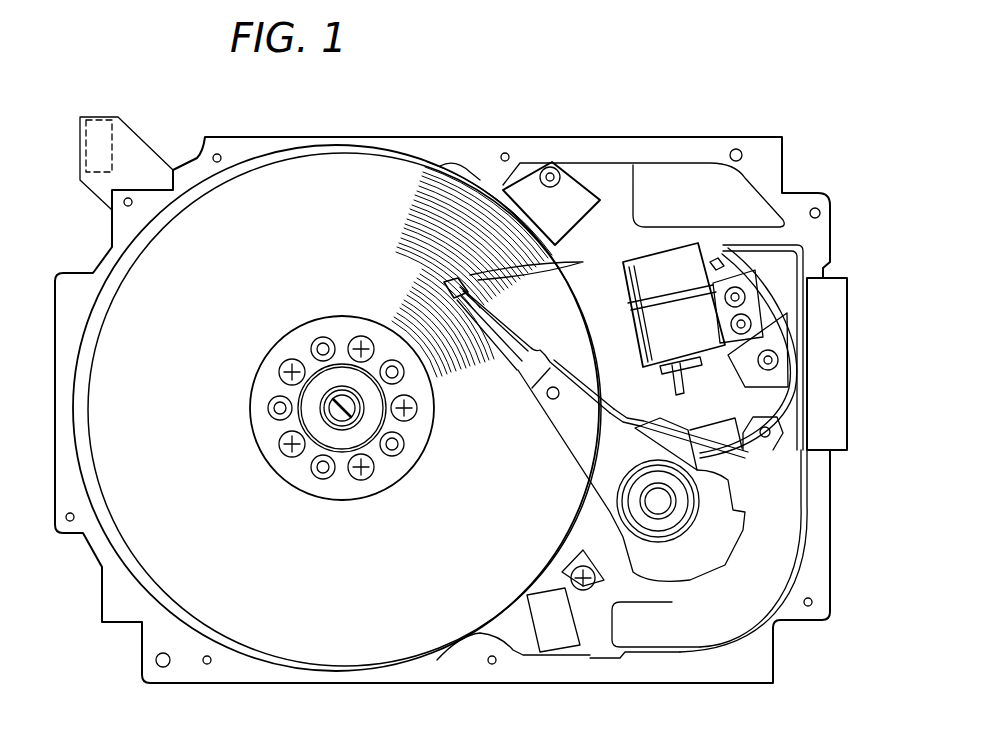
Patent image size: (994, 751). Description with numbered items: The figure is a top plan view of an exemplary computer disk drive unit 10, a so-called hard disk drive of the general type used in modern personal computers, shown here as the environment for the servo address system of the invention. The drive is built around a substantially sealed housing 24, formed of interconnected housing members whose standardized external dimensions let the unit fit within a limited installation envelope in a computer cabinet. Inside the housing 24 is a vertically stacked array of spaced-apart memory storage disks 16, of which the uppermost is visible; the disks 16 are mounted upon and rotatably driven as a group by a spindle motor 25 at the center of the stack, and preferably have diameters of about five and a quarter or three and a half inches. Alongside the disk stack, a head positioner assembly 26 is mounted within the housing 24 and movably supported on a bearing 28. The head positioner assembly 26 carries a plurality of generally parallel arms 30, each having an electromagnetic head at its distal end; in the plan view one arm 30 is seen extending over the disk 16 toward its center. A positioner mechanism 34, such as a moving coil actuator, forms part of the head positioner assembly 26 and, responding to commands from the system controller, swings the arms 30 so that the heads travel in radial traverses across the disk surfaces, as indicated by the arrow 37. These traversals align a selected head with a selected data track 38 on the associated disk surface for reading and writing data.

The computer disk drive unit 10 is at (652, 100).
The memory storage disks 16 is at (317, 640).
The sealed housing 24 is at (710, 672).
The spindle motor 25 is at (325, 433).
The head positioner assembly 26 is at (612, 482).
The bearing 28 is at (662, 505).
The arms 30 is at (578, 440).
The positioner mechanism 34 is at (773, 543).
The arrow 37 is at (447, 205).
The data track 38 is at (542, 259).